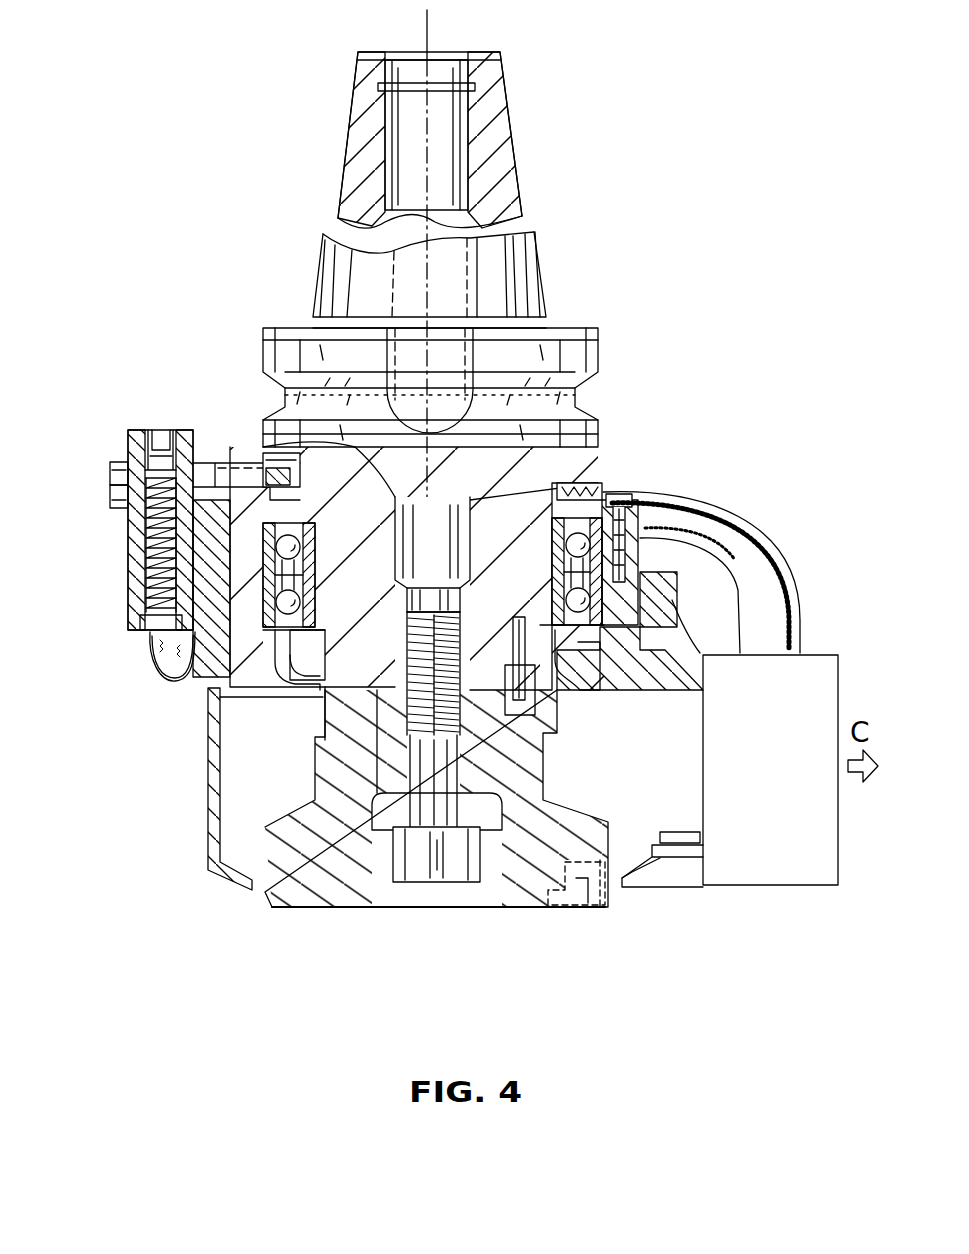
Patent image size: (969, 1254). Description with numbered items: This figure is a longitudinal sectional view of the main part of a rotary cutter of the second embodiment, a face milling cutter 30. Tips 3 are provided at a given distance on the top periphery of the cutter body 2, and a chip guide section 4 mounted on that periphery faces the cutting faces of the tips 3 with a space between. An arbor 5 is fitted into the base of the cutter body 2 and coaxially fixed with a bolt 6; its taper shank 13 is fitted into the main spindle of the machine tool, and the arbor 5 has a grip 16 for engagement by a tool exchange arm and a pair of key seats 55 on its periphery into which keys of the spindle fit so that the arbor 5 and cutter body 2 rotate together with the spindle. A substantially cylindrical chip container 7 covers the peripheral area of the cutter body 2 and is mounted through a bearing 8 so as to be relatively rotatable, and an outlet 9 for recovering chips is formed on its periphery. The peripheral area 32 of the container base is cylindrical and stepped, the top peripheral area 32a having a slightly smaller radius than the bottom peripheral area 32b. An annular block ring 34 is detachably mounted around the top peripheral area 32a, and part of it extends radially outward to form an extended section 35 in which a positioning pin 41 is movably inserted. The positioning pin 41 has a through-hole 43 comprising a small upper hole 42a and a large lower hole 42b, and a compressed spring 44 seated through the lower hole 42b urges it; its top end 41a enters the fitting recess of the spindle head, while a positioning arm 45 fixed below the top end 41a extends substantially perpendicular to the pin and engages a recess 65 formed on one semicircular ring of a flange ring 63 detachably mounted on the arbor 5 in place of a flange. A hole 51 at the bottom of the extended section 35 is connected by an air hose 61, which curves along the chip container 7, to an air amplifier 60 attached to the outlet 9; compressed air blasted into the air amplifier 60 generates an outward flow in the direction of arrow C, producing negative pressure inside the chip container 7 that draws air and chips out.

The cutter body 2 is at (312, 910).
The tips 3 is at (570, 910).
The chip guide section 4 is at (598, 906).
The arbor 5 is at (612, 422).
The bolt 6 is at (416, 908).
The chip container 7 is at (204, 720).
The bearing 8 is at (318, 597).
The outlet 9 is at (680, 890).
The taper shank 13 is at (538, 252).
The grip 16 is at (573, 396).
The face milling cutter 30 is at (338, 910).
The peripheral area 32 is at (741, 565).
The top peripheral area 32a is at (640, 562).
The bottom peripheral area 32b is at (738, 575).
The block ring 34 is at (672, 594).
The extended section 35 is at (142, 626).
The positioning pin 41 is at (130, 520).
The top end 41a is at (193, 436).
The upper hole 42a is at (113, 460).
The lower hole 42b is at (110, 503).
The through-hole 43 is at (79, 424).
The compressed spring 44 is at (145, 587).
The positioning arm 45 is at (223, 496).
The hole 51 is at (148, 645).
The key seat 55 is at (408, 363).
The air amplifier 60 is at (822, 655).
The air hose 61 is at (707, 496).
The flange ring 63 is at (602, 470).
The recess 65 is at (302, 470).